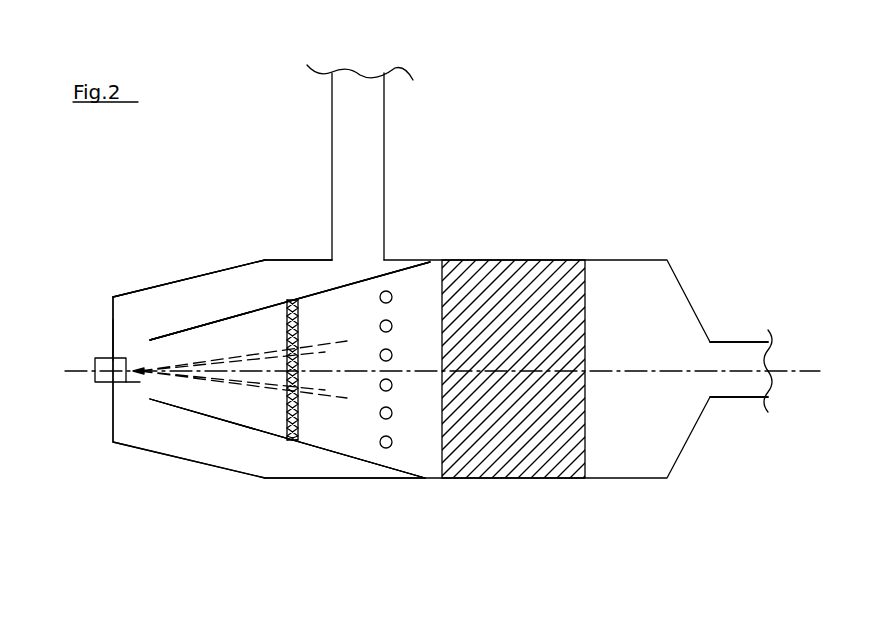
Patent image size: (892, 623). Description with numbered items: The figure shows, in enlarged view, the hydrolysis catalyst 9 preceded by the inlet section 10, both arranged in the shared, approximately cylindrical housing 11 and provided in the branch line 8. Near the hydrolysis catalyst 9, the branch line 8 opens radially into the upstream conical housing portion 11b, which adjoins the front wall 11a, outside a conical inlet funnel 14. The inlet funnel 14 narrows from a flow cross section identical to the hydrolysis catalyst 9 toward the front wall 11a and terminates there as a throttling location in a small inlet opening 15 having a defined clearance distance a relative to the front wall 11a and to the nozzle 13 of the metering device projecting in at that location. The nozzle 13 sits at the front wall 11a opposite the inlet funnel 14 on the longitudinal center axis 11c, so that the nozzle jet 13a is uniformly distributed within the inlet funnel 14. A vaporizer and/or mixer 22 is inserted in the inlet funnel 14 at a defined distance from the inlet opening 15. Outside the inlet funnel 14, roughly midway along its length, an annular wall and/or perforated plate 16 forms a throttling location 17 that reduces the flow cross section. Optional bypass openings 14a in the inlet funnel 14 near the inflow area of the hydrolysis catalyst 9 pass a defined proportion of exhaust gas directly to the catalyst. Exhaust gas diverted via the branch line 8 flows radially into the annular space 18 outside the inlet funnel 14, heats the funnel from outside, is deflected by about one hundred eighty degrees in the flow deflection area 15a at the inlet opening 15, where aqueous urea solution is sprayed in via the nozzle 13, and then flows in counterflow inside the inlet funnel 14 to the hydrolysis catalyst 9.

The branch line 8 is at (384, 125).
The hydrolysis catalyst 9 is at (518, 363).
The inlet section 10 is at (178, 447).
The housing 11 is at (608, 258).
The front wall 11a is at (113, 307).
The conical housing portion 11b is at (113, 297).
The longitudinal center axis 11c is at (648, 370).
The nozzle 13 is at (100, 348).
The nozzle jet 13a is at (345, 340).
The inlet funnel 14 is at (328, 452).
The bypass openings 14a is at (392, 355).
The inlet opening 15 is at (117, 440).
The flow deflection area 15a is at (143, 382).
The annular wall and/or perforated plate 16 is at (238, 270).
The throttling location 17 is at (230, 303).
The annular space 18 is at (165, 300).
The vaporizer and/or mixer 22 is at (300, 440).
The clearance distance a is at (125, 340).